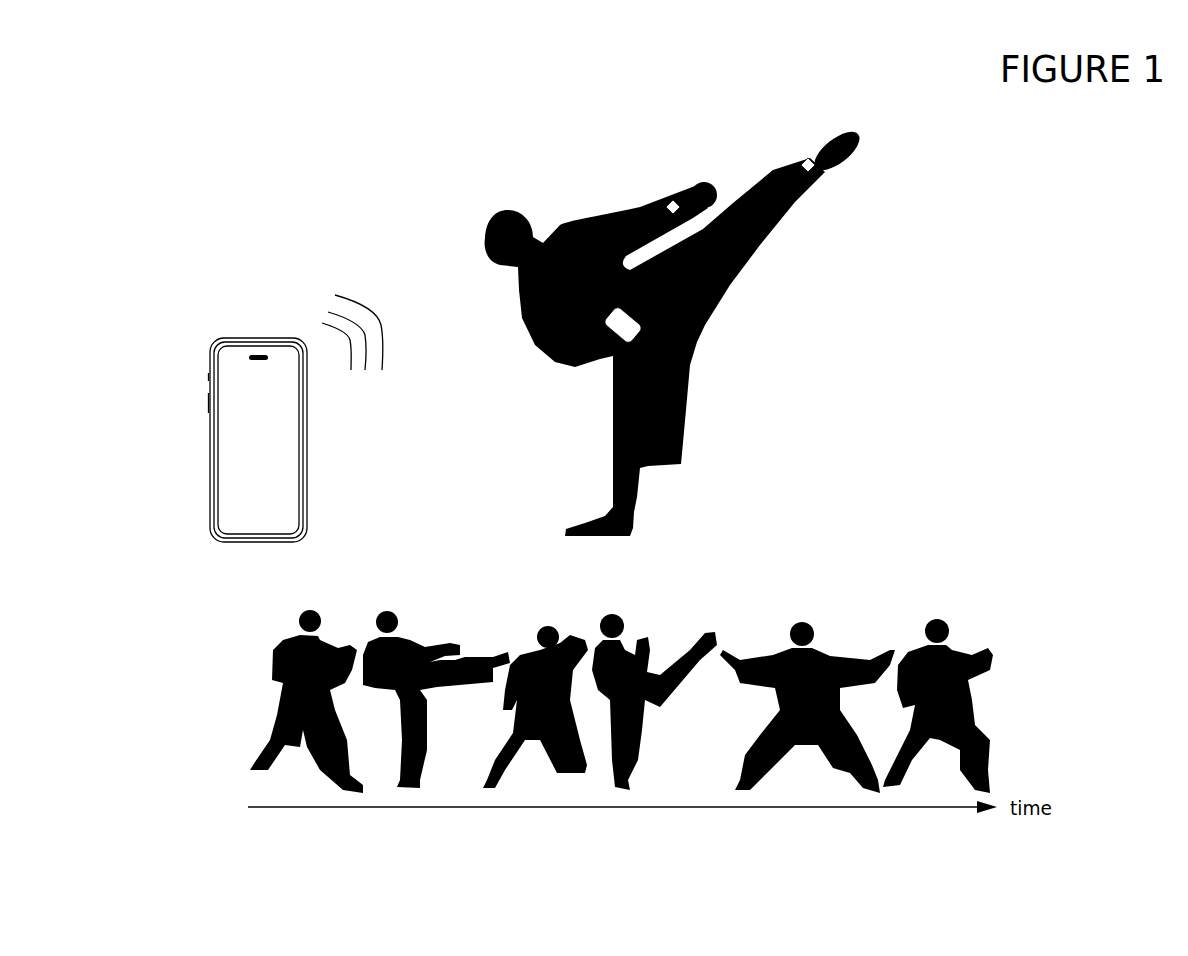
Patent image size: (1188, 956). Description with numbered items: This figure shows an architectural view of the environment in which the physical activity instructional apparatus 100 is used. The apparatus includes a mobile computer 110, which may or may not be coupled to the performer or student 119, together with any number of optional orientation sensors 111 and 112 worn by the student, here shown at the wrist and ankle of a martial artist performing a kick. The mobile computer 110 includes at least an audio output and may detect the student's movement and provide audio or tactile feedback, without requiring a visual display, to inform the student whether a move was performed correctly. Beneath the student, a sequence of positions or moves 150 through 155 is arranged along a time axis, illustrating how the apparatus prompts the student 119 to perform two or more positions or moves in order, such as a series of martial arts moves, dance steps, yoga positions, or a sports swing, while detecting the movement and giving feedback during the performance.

The physical activity instructional apparatus 100 is at (390, 158).
The mobile computer 110 is at (625, 330).
The orientation sensor 111 is at (800, 163).
The orientation sensor 112 is at (670, 203).
The performer or student 119 is at (475, 235).
The position or move 150 is at (296, 826).
The position or move 155 is at (927, 826).